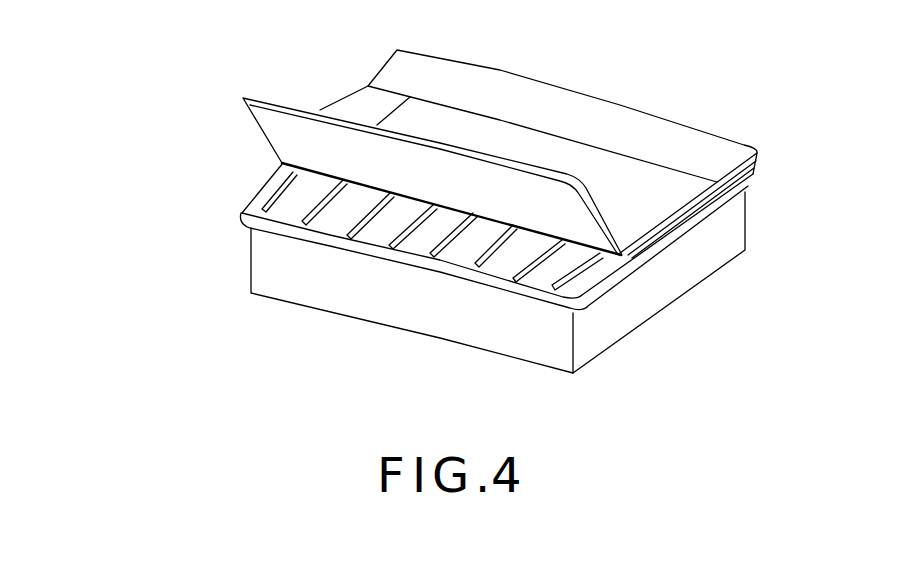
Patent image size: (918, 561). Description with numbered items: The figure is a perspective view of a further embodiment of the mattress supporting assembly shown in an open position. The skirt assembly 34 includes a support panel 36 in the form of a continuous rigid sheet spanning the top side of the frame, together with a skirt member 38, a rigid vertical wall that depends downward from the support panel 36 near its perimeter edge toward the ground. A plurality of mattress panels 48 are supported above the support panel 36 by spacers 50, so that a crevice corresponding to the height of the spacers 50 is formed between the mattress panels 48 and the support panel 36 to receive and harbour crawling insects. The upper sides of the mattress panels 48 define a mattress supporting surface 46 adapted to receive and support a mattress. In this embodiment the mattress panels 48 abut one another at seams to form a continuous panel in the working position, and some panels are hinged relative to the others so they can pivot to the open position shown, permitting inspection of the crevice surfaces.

The skirt assembly 34 is at (136, 256).
The support panel 36 is at (240, 212).
The skirt member 38 is at (270, 268).
The mattress supporting surface 46 is at (584, 160).
The mattress panels 48 is at (282, 120).
The spacers 50 is at (430, 254).